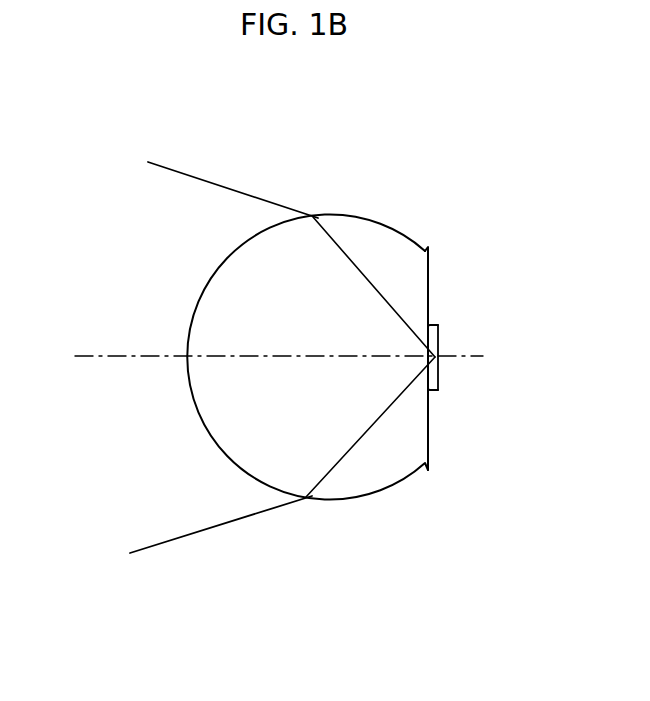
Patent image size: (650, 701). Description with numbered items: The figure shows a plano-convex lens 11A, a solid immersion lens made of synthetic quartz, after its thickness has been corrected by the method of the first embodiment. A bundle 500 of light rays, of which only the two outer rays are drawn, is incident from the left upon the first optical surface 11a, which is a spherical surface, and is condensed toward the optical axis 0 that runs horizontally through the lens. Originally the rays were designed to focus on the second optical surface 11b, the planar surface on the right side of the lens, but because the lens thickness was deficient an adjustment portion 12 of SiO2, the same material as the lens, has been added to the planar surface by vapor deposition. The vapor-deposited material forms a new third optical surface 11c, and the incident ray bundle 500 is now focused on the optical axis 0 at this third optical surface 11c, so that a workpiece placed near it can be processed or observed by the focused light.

The optical axis 0 is at (261, 355).
The plano-convex lens 11A is at (310, 329).
The first optical surface 11a is at (212, 438).
The second optical surface 11b is at (428, 290).
The third optical surface 11c is at (438, 377).
The adjustment portion 12 is at (497, 327).
The bundle of light rays 500 is at (197, 175).